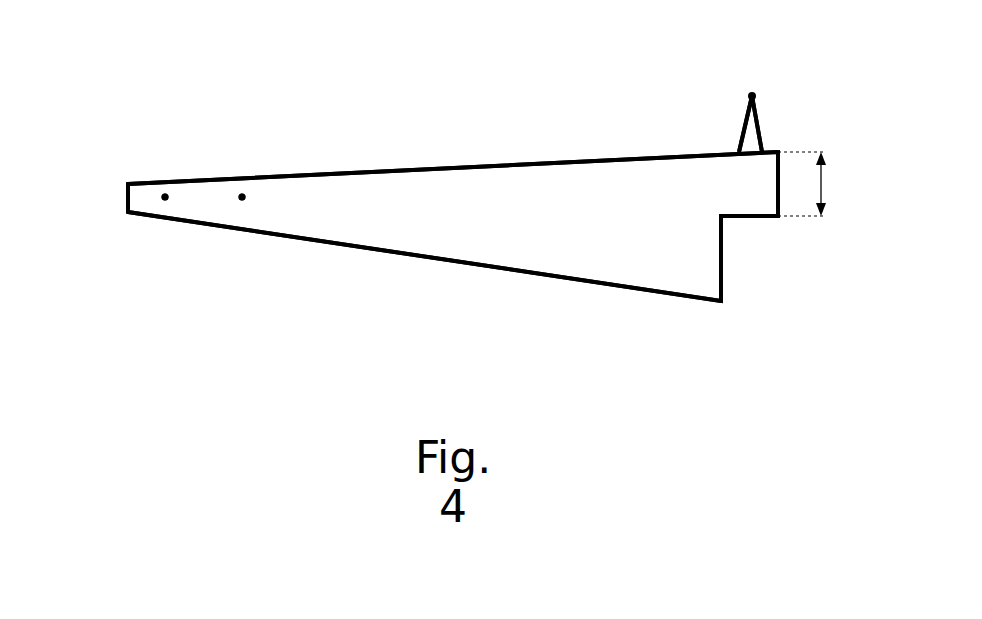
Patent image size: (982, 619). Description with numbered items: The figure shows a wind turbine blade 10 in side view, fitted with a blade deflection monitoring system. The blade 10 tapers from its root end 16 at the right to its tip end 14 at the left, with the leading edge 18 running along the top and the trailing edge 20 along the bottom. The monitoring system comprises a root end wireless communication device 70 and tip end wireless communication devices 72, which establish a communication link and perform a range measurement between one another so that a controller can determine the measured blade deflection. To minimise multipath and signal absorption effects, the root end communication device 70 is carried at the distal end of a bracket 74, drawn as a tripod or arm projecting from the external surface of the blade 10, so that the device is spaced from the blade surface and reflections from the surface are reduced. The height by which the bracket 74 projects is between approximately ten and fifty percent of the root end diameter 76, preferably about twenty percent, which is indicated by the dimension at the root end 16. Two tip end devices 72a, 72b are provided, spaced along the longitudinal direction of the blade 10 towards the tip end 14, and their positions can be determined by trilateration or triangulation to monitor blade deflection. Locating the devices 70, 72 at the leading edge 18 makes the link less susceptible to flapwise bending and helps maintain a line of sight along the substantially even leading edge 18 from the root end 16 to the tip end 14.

The wind turbine blade 10 is at (395, 136).
The tip end 14 is at (128, 205).
The root end 16 is at (779, 203).
The leading edge 18 is at (510, 157).
The trailing edge 20 is at (487, 269).
The root end wireless communication device 70 is at (749, 96).
The tip end wireless communication device 72 is at (243, 203).
The first tip device 72a is at (243, 191).
The second tip end device 72b is at (166, 192).
The bracket 74 is at (760, 127).
The root end diameter 76 is at (819, 184).